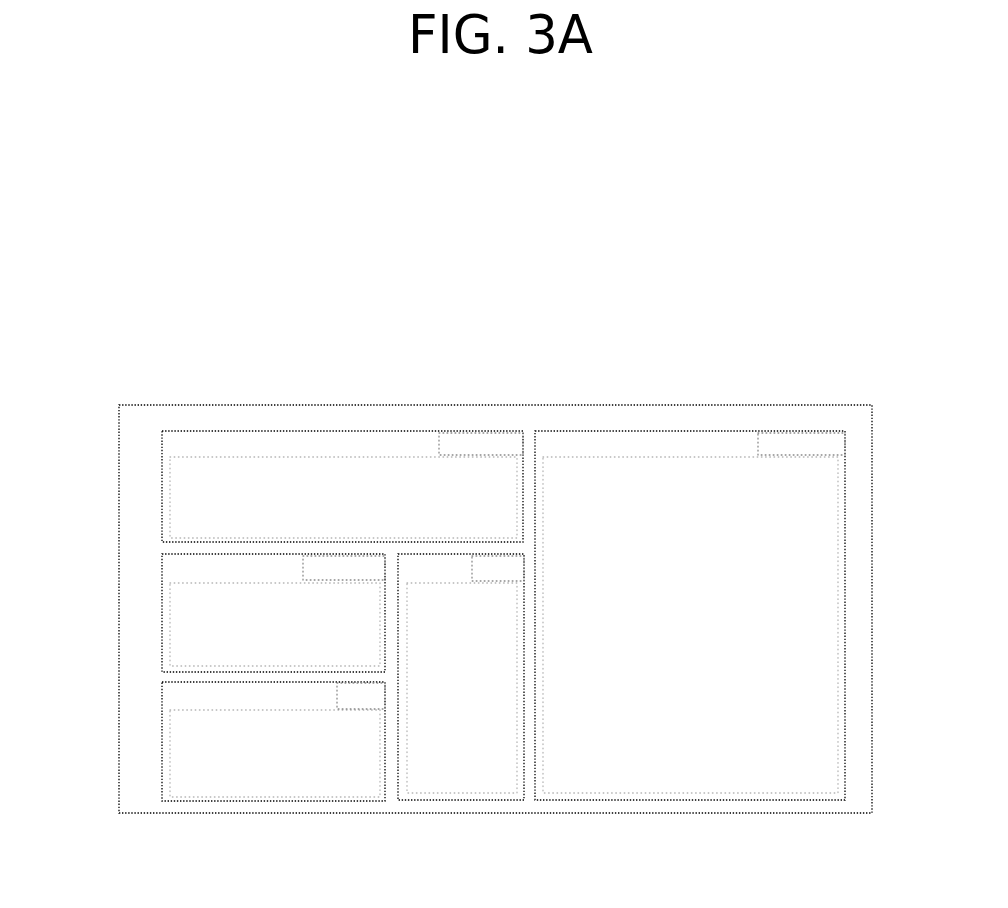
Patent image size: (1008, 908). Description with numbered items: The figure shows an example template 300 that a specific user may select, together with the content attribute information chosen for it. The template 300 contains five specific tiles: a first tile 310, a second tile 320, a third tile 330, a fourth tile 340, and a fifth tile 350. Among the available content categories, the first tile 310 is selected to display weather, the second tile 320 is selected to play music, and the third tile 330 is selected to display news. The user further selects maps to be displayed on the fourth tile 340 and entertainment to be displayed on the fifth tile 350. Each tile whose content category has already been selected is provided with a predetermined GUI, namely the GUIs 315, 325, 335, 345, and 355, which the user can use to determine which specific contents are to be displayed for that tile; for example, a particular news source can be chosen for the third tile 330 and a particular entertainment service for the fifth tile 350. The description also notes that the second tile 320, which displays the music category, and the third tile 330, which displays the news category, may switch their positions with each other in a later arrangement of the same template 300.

The template 300 is at (329, 281).
The first tile 310 is at (205, 432).
The predetermined GUI 315 is at (475, 432).
The second tile 320 is at (162, 623).
The predetermined GUI 325 is at (358, 580).
The third tile 330 is at (162, 763).
The predetermined GUI 335 is at (365, 710).
The fourth tile 340 is at (458, 800).
The predetermined GUI 345 is at (510, 582).
The fifth tile 350 is at (603, 430).
The predetermined GUI 355 is at (828, 430).